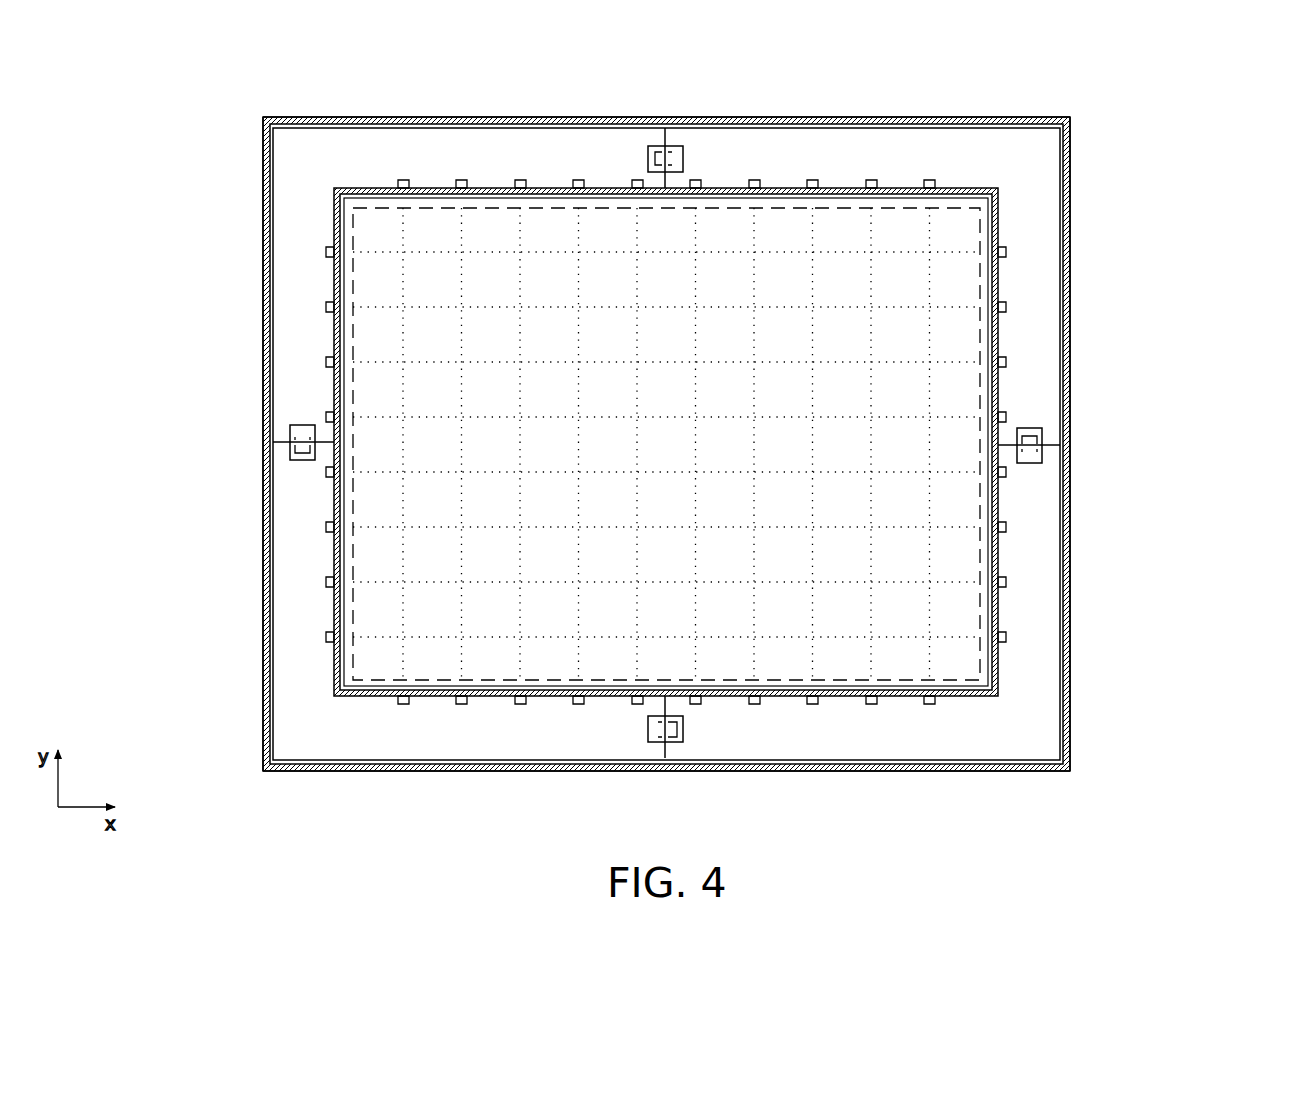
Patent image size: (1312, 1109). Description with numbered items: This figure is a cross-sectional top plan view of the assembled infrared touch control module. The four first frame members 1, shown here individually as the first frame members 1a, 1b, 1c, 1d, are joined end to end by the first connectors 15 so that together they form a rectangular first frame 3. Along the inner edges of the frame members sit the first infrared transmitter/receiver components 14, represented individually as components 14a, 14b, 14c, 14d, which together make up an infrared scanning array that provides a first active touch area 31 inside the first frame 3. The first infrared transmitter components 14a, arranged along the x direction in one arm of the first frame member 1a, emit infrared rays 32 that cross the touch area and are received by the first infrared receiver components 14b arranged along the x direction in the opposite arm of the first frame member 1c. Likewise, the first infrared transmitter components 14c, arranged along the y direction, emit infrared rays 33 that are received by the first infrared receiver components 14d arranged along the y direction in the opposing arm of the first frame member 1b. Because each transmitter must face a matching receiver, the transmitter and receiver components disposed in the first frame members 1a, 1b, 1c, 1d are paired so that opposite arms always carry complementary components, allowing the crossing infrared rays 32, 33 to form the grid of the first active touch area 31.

The first frame members 1 is at (773, 451).
The first frame member 1a is at (372, 117).
The first frame member 1b is at (962, 117).
The first frame member 1c is at (372, 771).
The first frame member 1d is at (962, 771).
The first frame 3 is at (1136, 122).
The first infrared transmitter/receiver components 14 is at (756, 454).
The first infrared transmitter components 14a is at (521, 180).
The first infrared receiver components 14b is at (521, 704).
The first infrared transmitter components 14c is at (326, 307).
The first infrared receiver components 14d is at (1006, 311).
The first connectors 15 is at (655, 150).
The first active touch area 31 is at (978, 190).
The infrared rays 32 is at (940, 272).
The infrared rays 33 is at (962, 305).